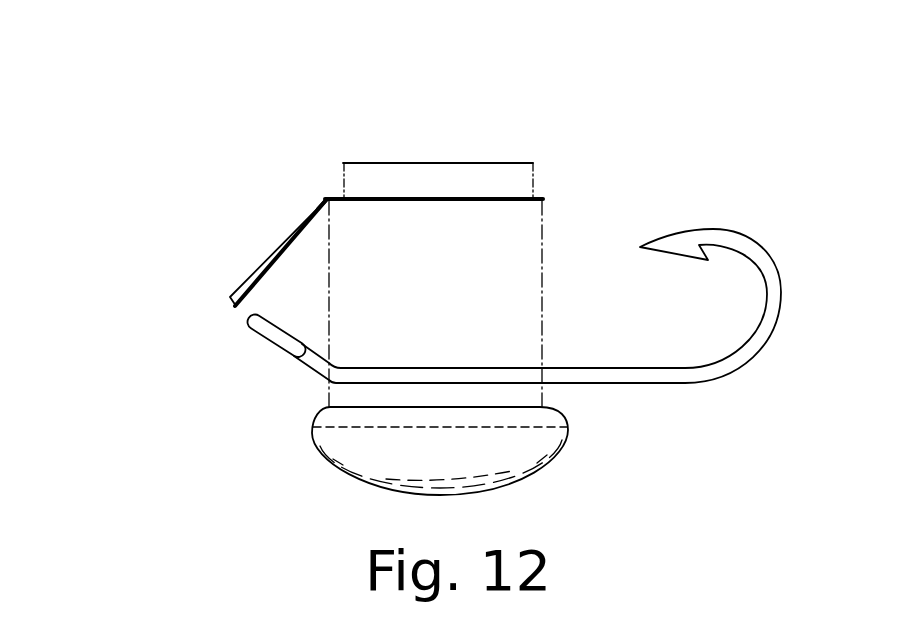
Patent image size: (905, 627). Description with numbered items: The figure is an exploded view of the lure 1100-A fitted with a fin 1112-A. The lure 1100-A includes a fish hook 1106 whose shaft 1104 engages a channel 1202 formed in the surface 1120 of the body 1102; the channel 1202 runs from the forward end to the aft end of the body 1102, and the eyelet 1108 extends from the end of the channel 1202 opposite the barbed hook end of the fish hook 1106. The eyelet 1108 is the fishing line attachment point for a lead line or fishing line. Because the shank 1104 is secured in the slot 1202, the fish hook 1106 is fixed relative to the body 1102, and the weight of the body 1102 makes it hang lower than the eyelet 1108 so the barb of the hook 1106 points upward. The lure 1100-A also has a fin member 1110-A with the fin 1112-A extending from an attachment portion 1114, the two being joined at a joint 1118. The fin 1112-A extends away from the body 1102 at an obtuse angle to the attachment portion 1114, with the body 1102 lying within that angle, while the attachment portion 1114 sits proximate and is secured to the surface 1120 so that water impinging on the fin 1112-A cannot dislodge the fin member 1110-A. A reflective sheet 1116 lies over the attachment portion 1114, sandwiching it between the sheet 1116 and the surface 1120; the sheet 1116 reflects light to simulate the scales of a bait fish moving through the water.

The lure 1100-A is at (170, 104).
The body 1102 is at (311, 443).
The shaft 1104 is at (631, 367).
The fish hook 1106 is at (730, 232).
The eyelet 1108 is at (285, 323).
The fin member 1110-A is at (246, 222).
The fin 1112-A is at (230, 296).
The attachment portion 1114 is at (460, 201).
The reflective sheet 1116 is at (492, 162).
The joint 1118 is at (334, 197).
The surface 1120 is at (477, 406).
The channel 1202 is at (378, 428).